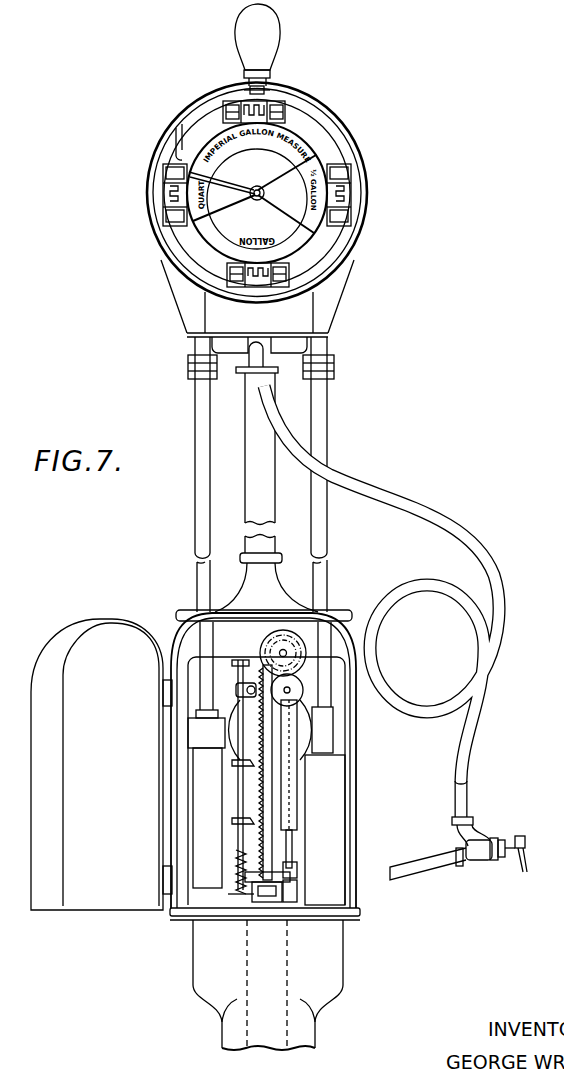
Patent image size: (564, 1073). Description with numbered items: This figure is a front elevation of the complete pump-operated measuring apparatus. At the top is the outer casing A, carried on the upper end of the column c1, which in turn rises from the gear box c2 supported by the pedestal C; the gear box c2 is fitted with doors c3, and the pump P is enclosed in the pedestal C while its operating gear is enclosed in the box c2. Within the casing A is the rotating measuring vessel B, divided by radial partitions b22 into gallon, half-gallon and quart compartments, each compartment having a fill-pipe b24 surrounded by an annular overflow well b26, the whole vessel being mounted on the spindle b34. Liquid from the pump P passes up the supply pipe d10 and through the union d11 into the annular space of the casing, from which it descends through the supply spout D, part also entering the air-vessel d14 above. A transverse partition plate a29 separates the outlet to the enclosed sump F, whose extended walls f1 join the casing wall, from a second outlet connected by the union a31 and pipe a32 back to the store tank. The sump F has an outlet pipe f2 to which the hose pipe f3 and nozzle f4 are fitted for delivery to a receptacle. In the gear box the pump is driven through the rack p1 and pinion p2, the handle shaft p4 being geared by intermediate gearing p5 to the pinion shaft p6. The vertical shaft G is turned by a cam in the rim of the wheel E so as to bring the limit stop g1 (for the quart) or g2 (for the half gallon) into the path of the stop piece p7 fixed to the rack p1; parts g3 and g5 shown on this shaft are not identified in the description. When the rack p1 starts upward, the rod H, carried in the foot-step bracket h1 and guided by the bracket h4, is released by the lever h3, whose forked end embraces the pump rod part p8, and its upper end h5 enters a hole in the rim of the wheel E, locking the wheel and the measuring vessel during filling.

The outer casing A is at (336, 112).
The rotating measuring vessel B is at (295, 125).
The supply spout D is at (267, 92).
The air-vessel d14 is at (270, 28).
The radial partitions b22 is at (280, 176).
The fill-pipe b24 is at (243, 106).
The annular overflow well b26 is at (226, 112).
The spindle b34 is at (264, 193).
The transverse partition plate a29 is at (178, 145).
The sump wall extensions f1 is at (192, 309).
The sump F is at (238, 352).
The outlet pipe f2 is at (266, 374).
The union d11 is at (188, 368).
The union a31 is at (332, 368).
The supply pipe d10 is at (199, 546).
The pipe a32 is at (322, 558).
The column c1 is at (247, 488).
The intermediate gearing p5 is at (278, 632).
The hose pipe f3 is at (398, 518).
The nozzle f4 is at (476, 856).
The gear box c2 is at (183, 634).
The doors c3 is at (118, 912).
The pedestal C is at (330, 962).
The pump P is at (247, 970).
The wheel E is at (245, 714).
The pinion shaft p6 is at (286, 653).
The shaft p4 is at (290, 690).
The pinion p2 is at (263, 651).
The rack p1 is at (273, 812).
The bracket h4 is at (290, 742).
The upper end of rod h5 is at (292, 770).
The rod H is at (293, 797).
The lever h3 is at (298, 875).
The foot-step bracket h1 is at (298, 891).
The stop piece p7 is at (262, 870).
The pump rod part p8 is at (270, 884).
The vertical shaft G is at (238, 800).
The rod bracket g3 is at (246, 690).
The limit stop g2 is at (236, 765).
The limit stop g1 is at (236, 822).
The spring g5 is at (238, 865).